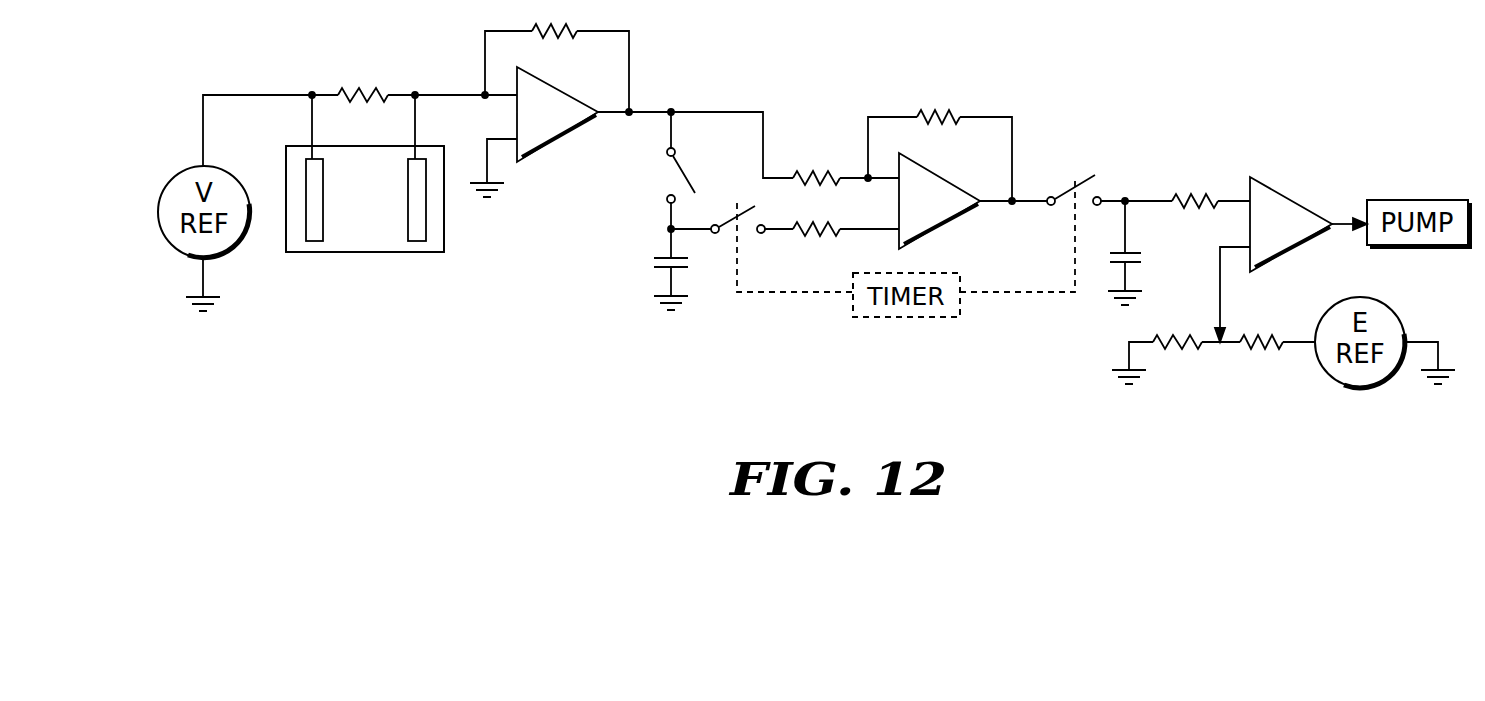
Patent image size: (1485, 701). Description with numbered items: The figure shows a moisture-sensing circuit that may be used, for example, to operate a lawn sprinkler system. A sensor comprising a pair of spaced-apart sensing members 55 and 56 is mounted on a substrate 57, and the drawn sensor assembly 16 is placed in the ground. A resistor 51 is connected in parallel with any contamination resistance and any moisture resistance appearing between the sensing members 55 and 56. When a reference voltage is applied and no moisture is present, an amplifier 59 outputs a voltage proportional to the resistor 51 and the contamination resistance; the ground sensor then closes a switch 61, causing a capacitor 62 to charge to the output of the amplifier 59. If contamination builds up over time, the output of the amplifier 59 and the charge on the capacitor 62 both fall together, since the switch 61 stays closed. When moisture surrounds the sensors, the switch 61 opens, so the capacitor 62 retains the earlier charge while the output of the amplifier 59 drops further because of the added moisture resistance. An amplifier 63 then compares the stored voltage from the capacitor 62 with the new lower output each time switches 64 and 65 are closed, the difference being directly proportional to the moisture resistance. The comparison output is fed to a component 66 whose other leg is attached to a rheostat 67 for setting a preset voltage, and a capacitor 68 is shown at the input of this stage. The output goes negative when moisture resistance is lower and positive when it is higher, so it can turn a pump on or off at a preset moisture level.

The sensor cell 16 is at (365, 202).
The resistor 51 is at (352, 85).
The sensing member 55 is at (417, 232).
The sensing member 56 is at (316, 232).
The substrate 57 is at (382, 253).
The amplifier 59 is at (567, 138).
The switch 61 is at (667, 177).
The capacitor 62 is at (652, 262).
The amplifier 63 is at (938, 233).
The switch 64 is at (727, 233).
The switch 65 is at (1095, 183).
The capacitor 66 is at (1278, 180).
The rheostat 67 is at (1223, 347).
The capacitor 68 is at (1147, 257).